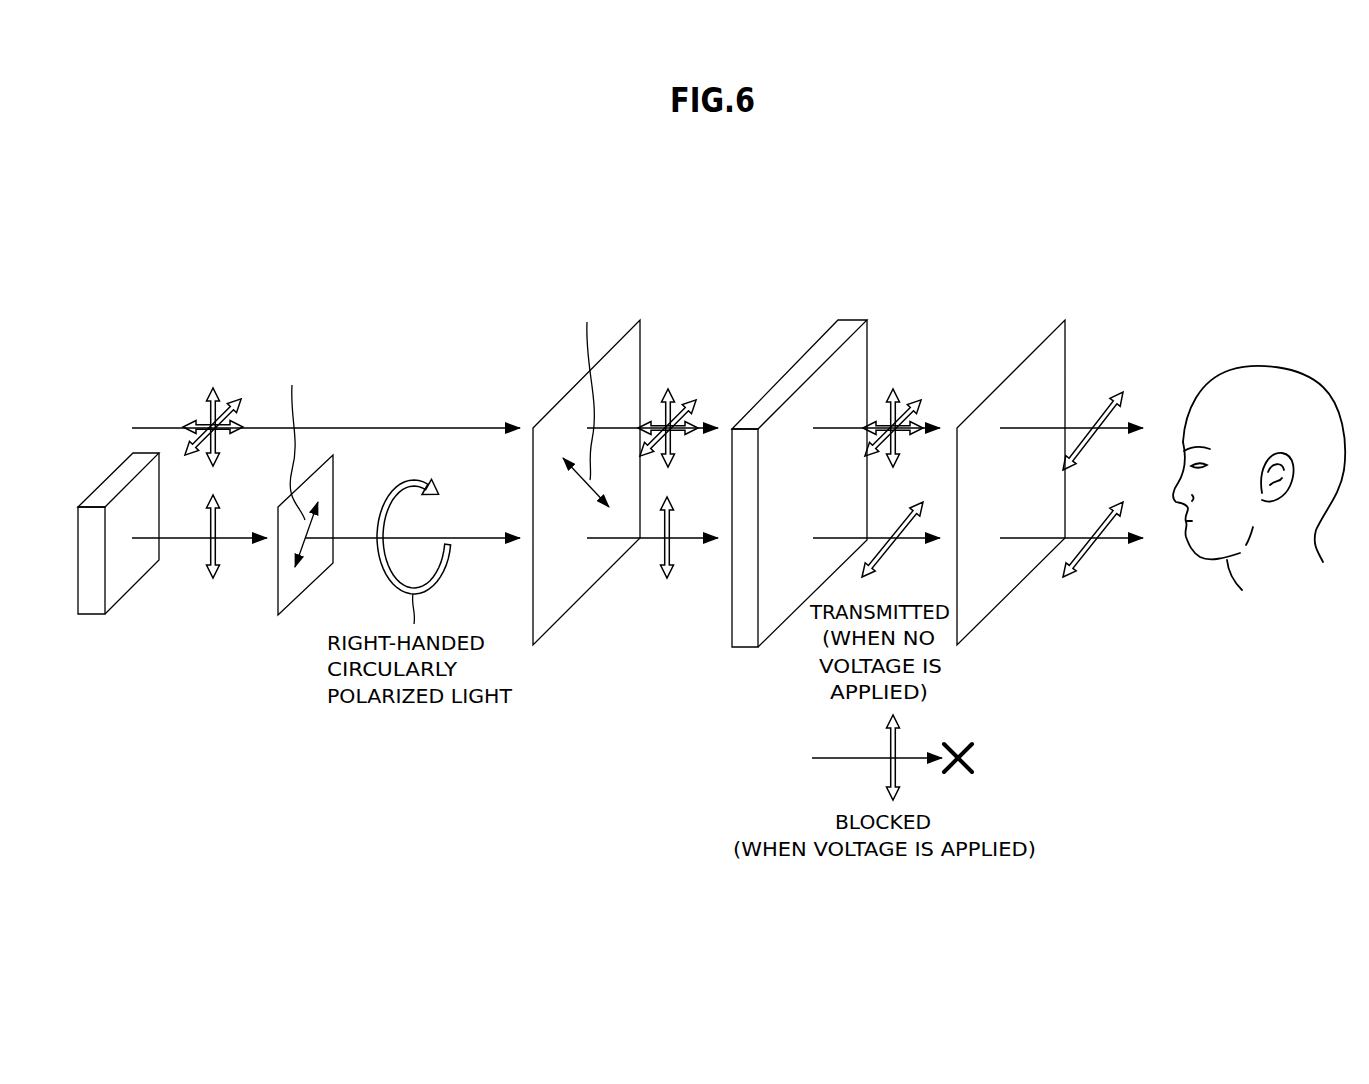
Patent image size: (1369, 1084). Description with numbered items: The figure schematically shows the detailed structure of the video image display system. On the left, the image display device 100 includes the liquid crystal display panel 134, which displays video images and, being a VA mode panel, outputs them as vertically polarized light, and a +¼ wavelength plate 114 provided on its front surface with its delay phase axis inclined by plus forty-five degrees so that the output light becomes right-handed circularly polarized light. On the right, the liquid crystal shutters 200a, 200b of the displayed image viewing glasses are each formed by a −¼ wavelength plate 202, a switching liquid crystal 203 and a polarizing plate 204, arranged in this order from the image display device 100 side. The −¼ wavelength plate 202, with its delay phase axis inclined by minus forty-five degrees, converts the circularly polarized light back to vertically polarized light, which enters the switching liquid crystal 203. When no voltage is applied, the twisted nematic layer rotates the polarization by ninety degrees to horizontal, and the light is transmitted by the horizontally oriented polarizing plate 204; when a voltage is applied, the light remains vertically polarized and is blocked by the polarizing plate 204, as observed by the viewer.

The image display device 100 is at (333, 266).
The liquid crystal display panel 134 is at (97, 615).
The +¼ wavelength plate 114 is at (295, 600).
The liquid crystal shutter 200a is at (1065, 266).
The liquid crystal shutter 200b is at (793, 510).
The −¼ wavelength plate 202 is at (565, 612).
The switching liquid crystal 203 is at (802, 355).
The polarizing plate 204 is at (1005, 610).